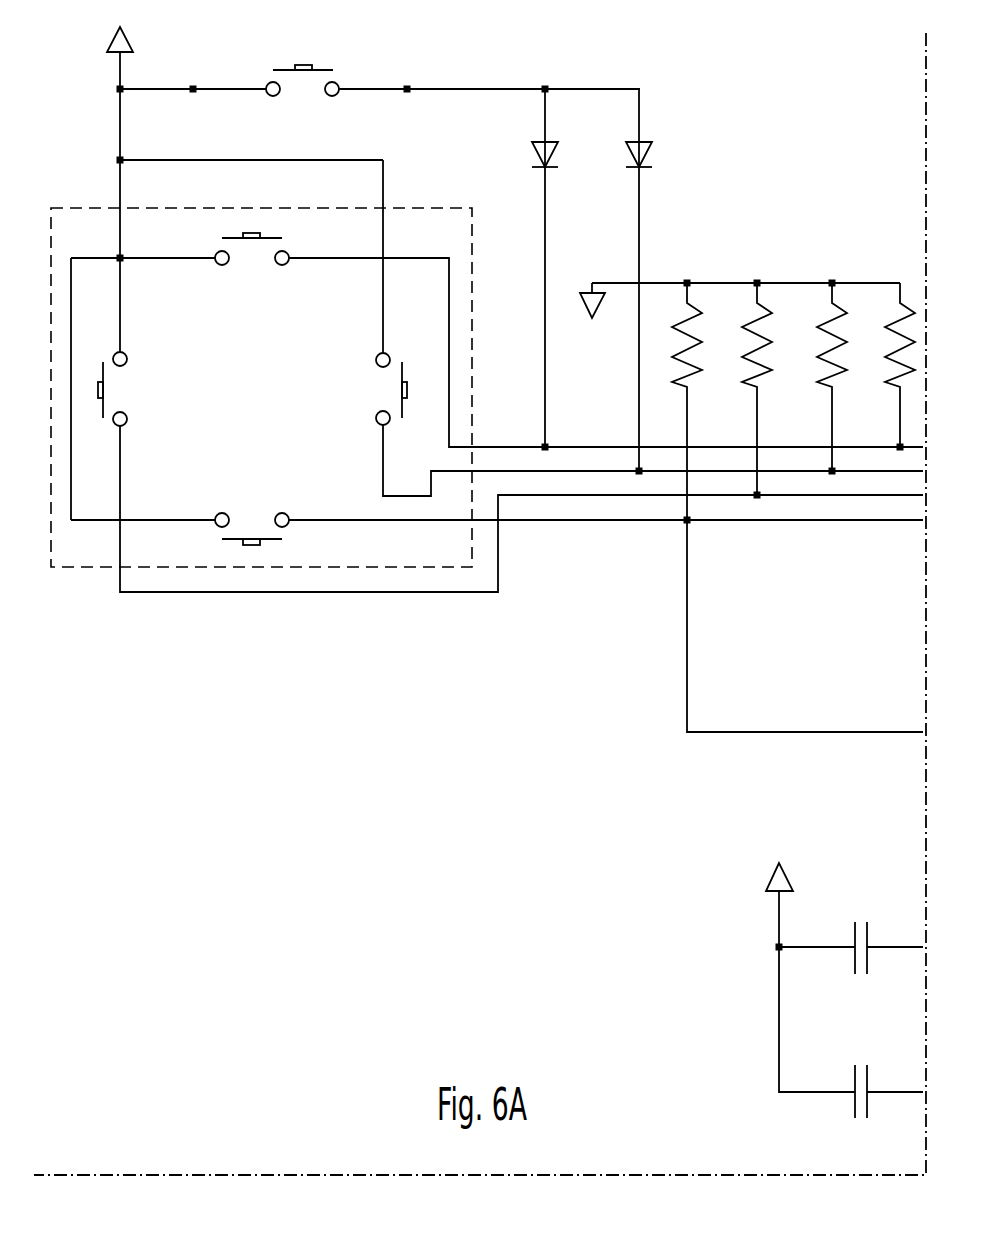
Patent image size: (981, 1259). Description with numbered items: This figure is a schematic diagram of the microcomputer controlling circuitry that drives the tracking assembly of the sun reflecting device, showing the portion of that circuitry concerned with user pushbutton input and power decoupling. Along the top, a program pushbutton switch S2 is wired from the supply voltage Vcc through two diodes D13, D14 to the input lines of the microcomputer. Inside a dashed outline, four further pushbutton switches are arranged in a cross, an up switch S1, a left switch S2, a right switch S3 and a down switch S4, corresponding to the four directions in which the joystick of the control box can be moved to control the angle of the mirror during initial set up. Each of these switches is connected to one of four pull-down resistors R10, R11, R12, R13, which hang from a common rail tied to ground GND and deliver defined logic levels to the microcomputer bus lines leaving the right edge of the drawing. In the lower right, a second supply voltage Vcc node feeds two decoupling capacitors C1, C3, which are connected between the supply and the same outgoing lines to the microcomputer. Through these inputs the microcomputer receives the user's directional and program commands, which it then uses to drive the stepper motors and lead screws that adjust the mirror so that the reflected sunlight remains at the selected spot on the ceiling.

The up pushbutton switch S1 is at (497, 342).
The program / left pushbutton switch S2 is at (369, 229).
The right pushbutton switch S3 is at (621, 328).
The down pushbutton switch S4 is at (497, 500).
The diode D13 is at (524, 270).
The diode D14 is at (663, 282).
The pull-down resistor R10 is at (784, 506).
The pull-down resistor R11 is at (743, 388).
The pull-down resistor R12 is at (814, 376).
The pull-down resistor R13 is at (885, 365).
The capacitor C1 is at (850, 931).
The capacitor C3 is at (851, 1032).
The supply voltage Vcc is at (450, 473).
The ground GND is at (594, 317).